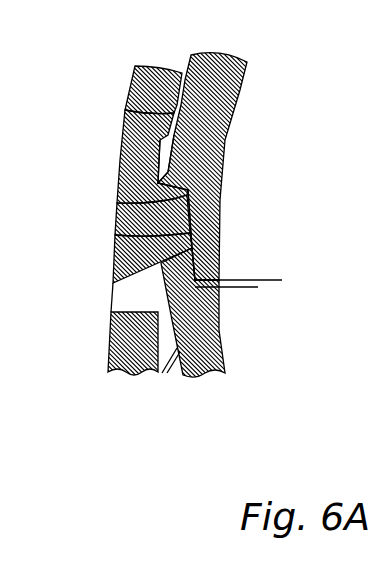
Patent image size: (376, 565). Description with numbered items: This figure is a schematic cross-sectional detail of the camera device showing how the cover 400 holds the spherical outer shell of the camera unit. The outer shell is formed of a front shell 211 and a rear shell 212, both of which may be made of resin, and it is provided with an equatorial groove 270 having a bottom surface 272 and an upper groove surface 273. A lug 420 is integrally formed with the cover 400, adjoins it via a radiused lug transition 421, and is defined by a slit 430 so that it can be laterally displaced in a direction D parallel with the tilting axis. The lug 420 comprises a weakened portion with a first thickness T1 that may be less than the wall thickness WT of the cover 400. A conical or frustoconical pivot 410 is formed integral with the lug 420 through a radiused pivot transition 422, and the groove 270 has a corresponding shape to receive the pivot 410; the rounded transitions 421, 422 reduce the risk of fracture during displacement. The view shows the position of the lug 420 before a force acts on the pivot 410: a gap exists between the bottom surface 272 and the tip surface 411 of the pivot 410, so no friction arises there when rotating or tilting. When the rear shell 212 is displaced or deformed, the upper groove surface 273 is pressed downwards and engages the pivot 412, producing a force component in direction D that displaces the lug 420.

The cover 400 is at (188, 195).
The pivot 410 is at (188, 215).
The tip surface 411 is at (117, 235).
The pivot 412 is at (117, 203).
The lug 420 is at (188, 215).
The lug transition 421 is at (127, 108).
The pivot transition 422 is at (173, 167).
The slit 430 is at (113, 284).
The front shell 211 is at (232, 112).
The rear shell 212 is at (205, 370).
The equatorial groove 270 is at (232, 247).
The bottom surface 272 is at (190, 231).
The upper groove surface 273 is at (160, 202).
The wall thickness WT is at (187, 58).
The first thickness T1 is at (125, 131).
The direction D is at (208, 462).